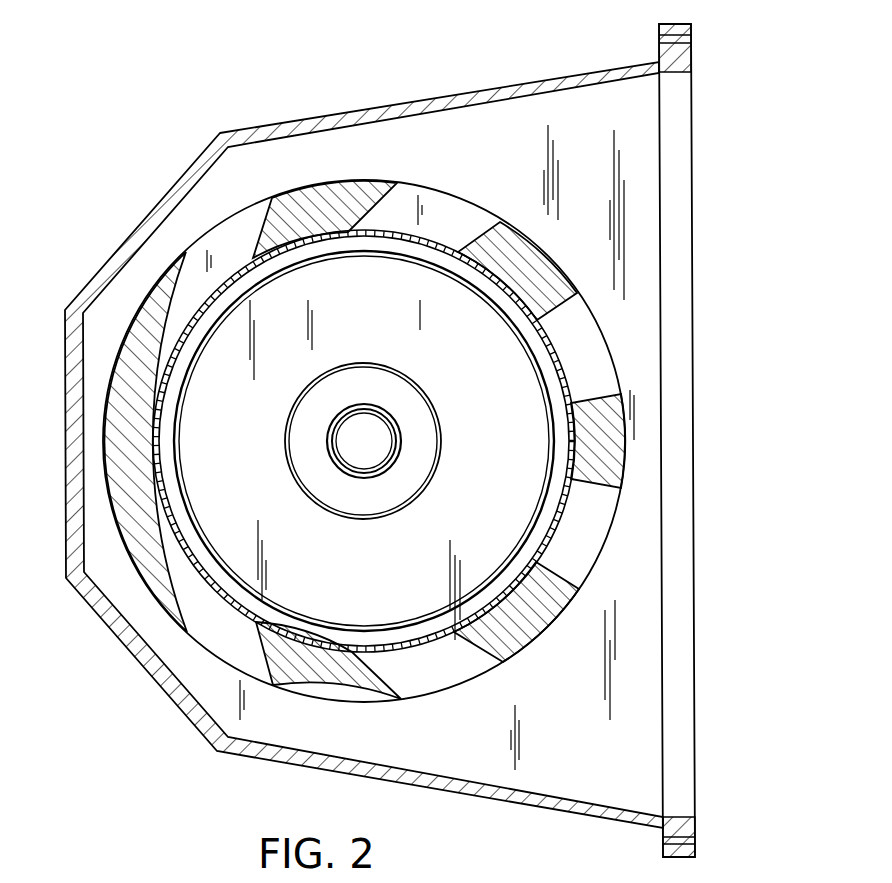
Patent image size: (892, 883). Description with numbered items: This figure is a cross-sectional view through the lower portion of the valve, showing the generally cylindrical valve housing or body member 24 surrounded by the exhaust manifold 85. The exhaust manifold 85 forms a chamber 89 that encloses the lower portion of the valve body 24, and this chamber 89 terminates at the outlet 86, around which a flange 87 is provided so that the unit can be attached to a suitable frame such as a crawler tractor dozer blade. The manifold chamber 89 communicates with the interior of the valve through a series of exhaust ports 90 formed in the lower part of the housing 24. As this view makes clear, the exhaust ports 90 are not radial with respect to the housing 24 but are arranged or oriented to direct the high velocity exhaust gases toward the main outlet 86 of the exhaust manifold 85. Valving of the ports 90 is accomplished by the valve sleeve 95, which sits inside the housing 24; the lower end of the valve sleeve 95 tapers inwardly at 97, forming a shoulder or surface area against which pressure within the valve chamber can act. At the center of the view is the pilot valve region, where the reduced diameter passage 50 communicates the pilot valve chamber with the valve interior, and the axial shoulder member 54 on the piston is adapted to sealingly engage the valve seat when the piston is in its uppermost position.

The valve housing 24 is at (137, 416).
The reduced diameter passage 50 is at (382, 412).
The axial shoulder member 54 is at (356, 433).
The exhaust manifold 85 is at (130, 237).
The outlet 86 is at (676, 120).
The flange 87 is at (684, 52).
The chamber 89 is at (388, 165).
The exhaust ports 90 is at (262, 218).
The valve sleeve 95 is at (162, 447).
The inwardly tapering lower end 97 is at (174, 504).